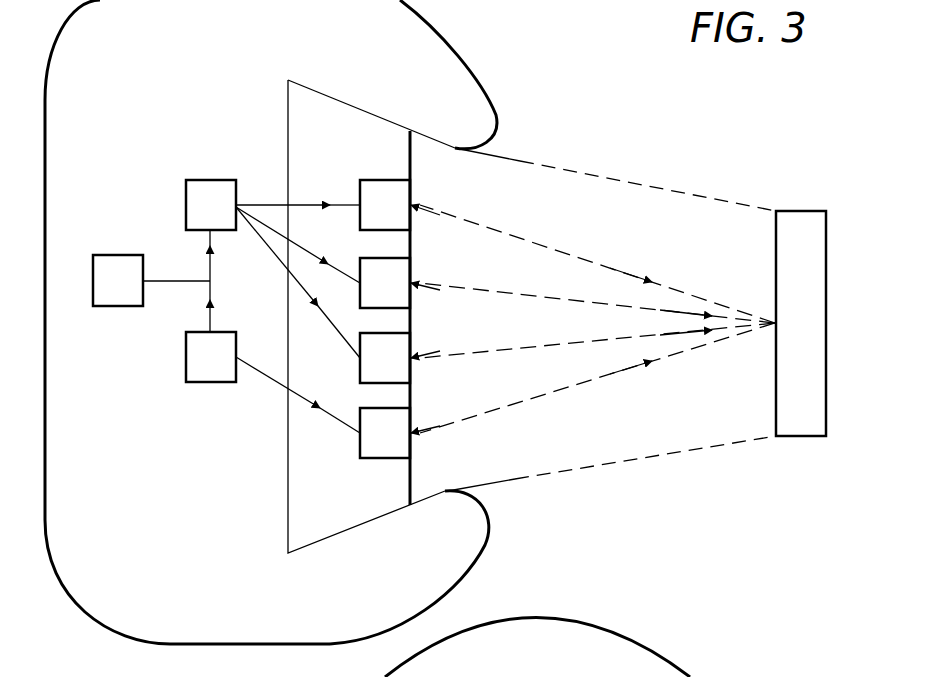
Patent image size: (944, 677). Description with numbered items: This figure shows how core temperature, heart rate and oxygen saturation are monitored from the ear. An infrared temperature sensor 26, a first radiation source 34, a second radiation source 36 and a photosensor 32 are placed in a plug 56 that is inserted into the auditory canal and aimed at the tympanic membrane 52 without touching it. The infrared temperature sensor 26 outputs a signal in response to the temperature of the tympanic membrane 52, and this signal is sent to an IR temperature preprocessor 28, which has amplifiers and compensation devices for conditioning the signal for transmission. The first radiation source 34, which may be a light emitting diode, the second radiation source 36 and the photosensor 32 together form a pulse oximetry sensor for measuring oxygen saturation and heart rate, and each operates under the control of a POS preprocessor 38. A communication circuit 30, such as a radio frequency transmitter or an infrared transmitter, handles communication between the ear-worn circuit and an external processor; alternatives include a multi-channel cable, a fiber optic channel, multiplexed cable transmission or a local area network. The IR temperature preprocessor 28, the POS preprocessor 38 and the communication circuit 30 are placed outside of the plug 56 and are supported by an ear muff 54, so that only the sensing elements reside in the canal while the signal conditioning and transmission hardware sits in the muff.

The infrared temperature sensor 26 is at (385, 433).
The IR temperature preprocessor 28 is at (210, 383).
The communication circuit 30 is at (118, 254).
The photosensor 32 is at (385, 358).
The first radiation source 34 is at (385, 205).
The second radiation source 36 is at (385, 283).
The POS preprocessor 38 is at (210, 178).
The tympanic membrane 52 is at (775, 227).
The ear muff 54 is at (462, 42).
The plug 56 is at (350, 128).